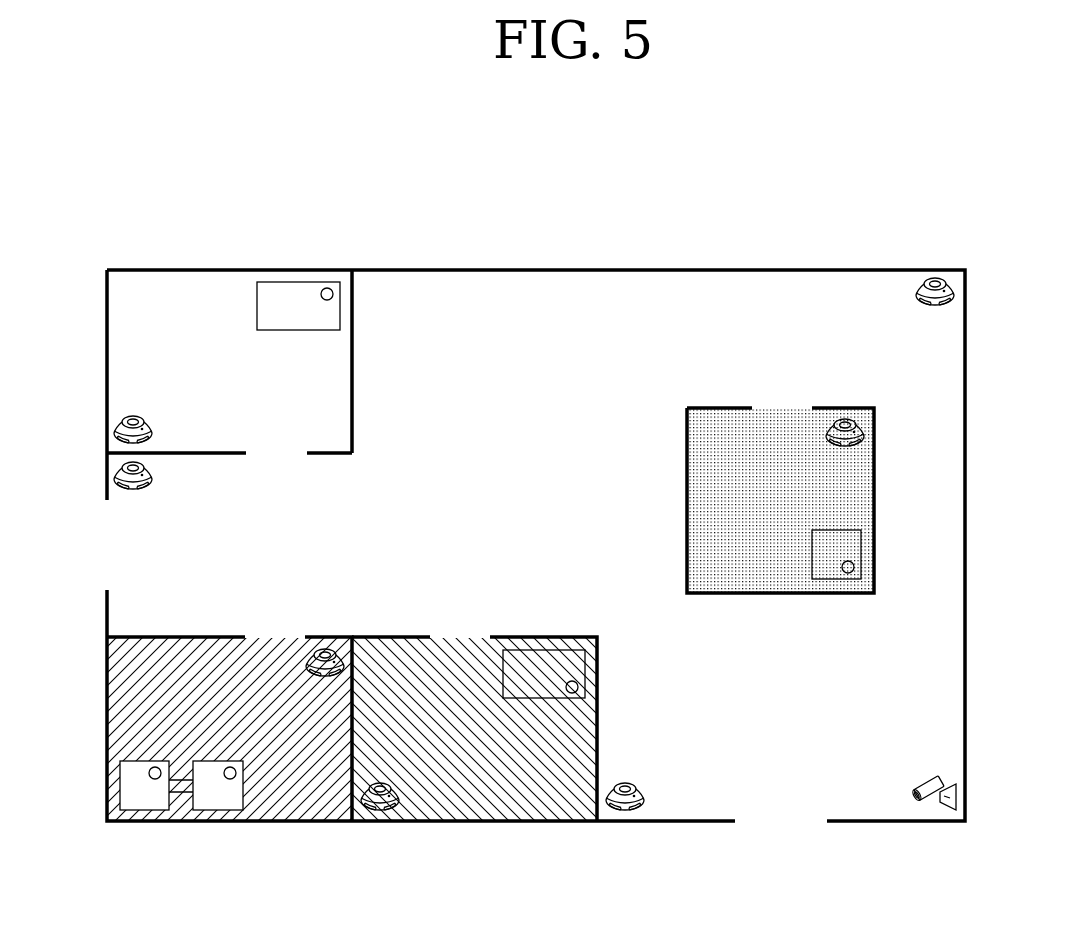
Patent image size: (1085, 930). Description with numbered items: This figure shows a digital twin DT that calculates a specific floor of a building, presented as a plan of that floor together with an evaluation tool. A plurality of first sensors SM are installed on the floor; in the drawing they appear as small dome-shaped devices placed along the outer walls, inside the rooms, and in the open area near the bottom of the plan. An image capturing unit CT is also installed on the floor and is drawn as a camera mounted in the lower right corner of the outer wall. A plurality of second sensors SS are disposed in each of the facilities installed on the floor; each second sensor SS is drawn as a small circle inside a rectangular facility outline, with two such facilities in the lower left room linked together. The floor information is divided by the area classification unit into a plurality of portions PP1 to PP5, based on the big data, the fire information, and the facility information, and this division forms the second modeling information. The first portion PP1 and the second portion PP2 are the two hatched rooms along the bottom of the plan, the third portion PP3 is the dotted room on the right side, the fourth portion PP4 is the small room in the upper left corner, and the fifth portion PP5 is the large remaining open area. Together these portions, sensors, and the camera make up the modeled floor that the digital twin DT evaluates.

The digital twin DT is at (910, 212).
The first sensor SM is at (955, 292).
The second sensor SS is at (327, 288).
The first portion PP1 is at (290, 797).
The second portion PP2 is at (488, 797).
The third portion PP3 is at (852, 483).
The fourth portion PP4 is at (191, 298).
The fifth portion PP5 is at (545, 298).
The image capturing unit CT is at (957, 800).